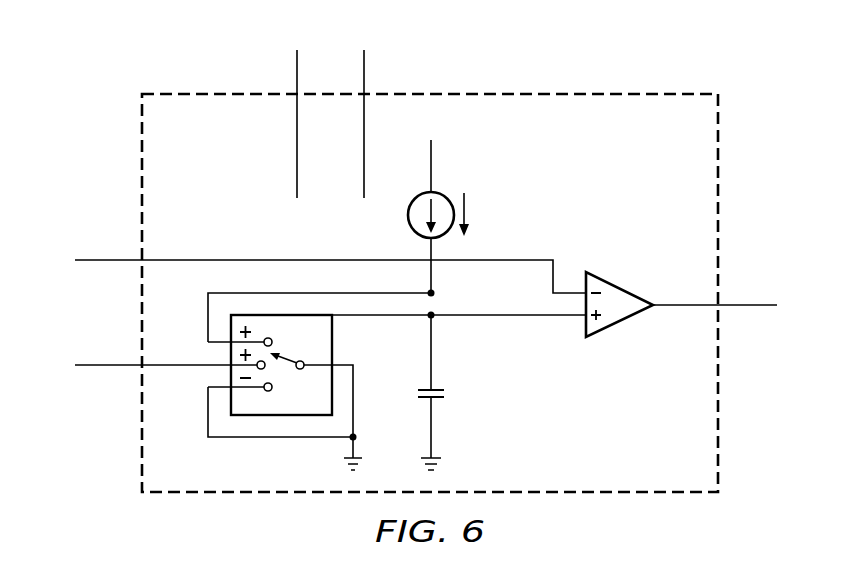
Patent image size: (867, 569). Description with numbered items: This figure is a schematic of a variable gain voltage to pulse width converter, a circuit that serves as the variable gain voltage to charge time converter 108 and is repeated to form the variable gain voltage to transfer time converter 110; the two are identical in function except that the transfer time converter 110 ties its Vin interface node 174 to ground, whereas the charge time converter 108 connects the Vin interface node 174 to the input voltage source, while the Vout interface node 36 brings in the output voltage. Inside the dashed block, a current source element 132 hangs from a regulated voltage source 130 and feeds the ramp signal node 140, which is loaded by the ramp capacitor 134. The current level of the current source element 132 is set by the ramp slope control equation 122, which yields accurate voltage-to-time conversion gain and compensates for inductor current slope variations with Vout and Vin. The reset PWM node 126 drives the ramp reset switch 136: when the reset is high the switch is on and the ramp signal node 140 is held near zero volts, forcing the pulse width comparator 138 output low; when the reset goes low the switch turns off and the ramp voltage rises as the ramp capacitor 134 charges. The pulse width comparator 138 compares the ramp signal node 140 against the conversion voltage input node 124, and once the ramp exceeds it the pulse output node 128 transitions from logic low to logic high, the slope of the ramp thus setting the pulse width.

The Vout interface node 36 is at (296, 71).
The Vin interface node 174 is at (366, 72).
The variable gain voltage to charge time converter 108 is at (571, 64).
The variable gain voltage to transfer time converter 110 is at (636, 64).
The ramp slope control equation 122 is at (242, 217).
The conversion voltage input node 124 is at (108, 258).
The reset PWM node 126 is at (108, 367).
The pulse output node 128 is at (745, 307).
The regulated voltage source 130 is at (433, 171).
The current source element 132 is at (415, 196).
The ramp capacitor 134 is at (446, 394).
The ramp reset switch 136 is at (333, 342).
The pulse width comparator 138 is at (622, 325).
The ramp signal node 140 is at (500, 318).